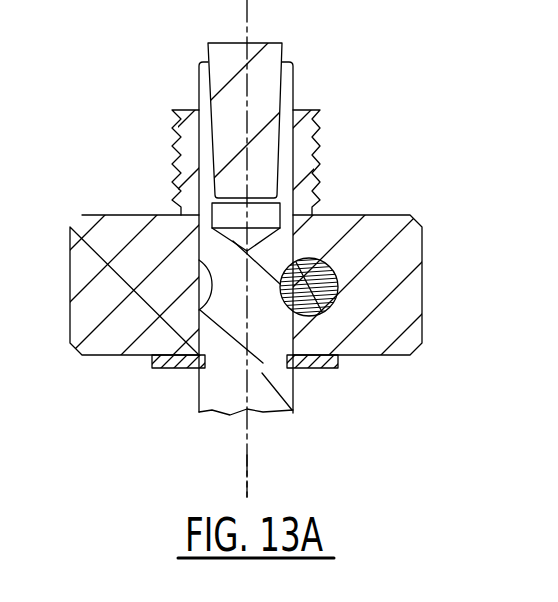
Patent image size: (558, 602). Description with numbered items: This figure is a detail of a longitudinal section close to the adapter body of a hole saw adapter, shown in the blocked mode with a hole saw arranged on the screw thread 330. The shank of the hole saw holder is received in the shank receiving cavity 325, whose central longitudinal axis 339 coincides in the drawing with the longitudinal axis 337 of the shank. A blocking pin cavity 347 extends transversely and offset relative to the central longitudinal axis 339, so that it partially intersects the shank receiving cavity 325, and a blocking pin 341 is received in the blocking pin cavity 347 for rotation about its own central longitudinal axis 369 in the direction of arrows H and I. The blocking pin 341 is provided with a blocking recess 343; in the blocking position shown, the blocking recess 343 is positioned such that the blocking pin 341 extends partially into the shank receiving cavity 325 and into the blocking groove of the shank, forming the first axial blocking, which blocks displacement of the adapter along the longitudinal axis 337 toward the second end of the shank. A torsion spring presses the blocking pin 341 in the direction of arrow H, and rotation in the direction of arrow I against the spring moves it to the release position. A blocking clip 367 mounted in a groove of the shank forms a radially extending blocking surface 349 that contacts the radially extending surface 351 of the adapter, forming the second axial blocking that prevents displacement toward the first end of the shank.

The tube 325 is at (262, 75).
The screw thread 330 is at (322, 135).
The longitudinal axis 337 is at (246, 468).
The central longitudinal axis 339 is at (247, 15).
The blocking pin 341 is at (315, 295).
The blocking recess 343 is at (353, 270).
The blocking pin cavity 347 is at (199, 283).
The blocking surface 349 is at (166, 357).
The surface 351 is at (110, 355).
The blocking clip 367 is at (315, 363).
The central longitudinal axis 369 is at (310, 258).
The arrow H is at (453, 347).
The arrow I is at (453, 207).